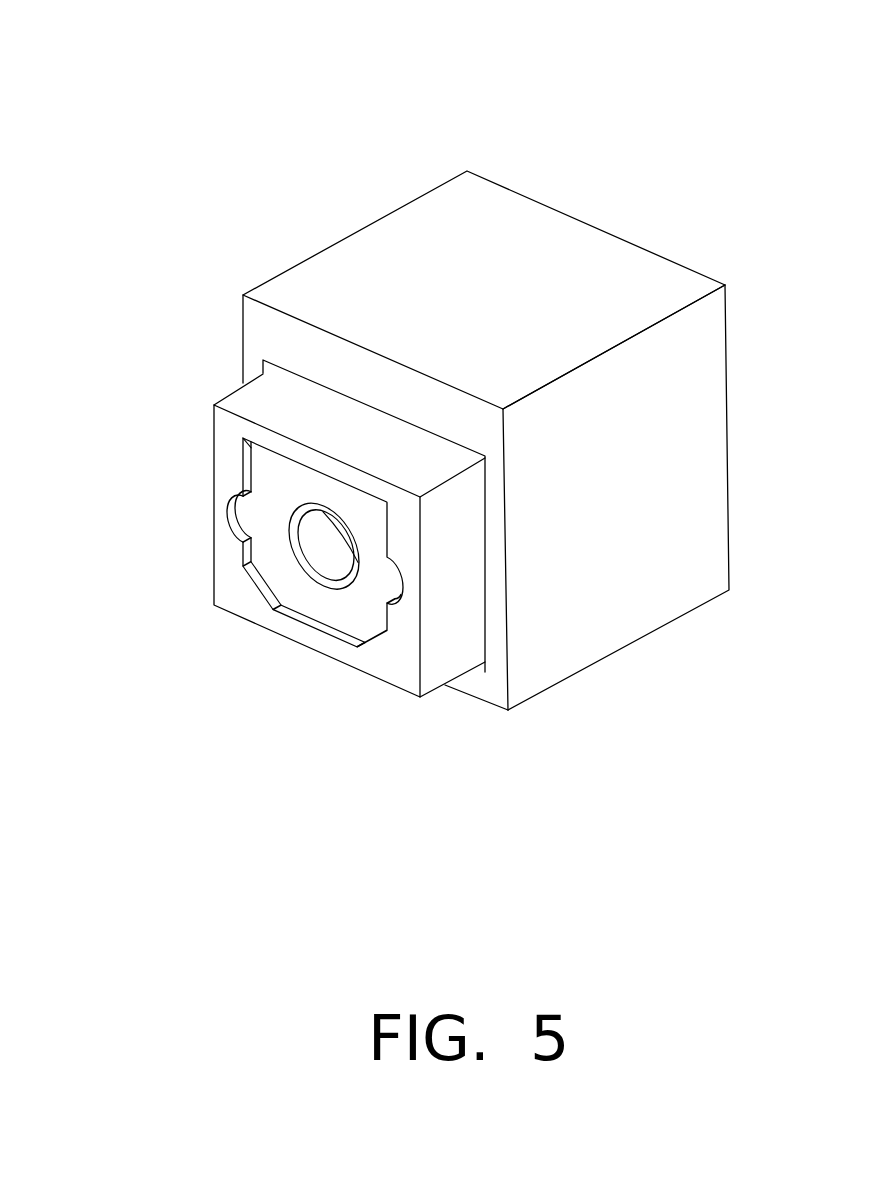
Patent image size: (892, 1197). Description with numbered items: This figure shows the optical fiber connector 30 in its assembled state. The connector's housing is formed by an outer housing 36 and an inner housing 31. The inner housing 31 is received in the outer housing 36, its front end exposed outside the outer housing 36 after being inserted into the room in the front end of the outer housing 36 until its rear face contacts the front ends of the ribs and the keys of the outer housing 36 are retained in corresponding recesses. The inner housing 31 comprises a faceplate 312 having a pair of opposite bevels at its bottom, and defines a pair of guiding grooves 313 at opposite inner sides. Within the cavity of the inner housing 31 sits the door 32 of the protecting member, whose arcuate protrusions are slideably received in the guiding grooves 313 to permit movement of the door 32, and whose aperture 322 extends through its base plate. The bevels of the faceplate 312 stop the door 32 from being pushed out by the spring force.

The optical fiber connector 30 is at (467, 72).
The inner housing 31 is at (497, 504).
The faceplate 312 is at (275, 590).
The guiding grooves 313 is at (230, 520).
The door 32 is at (343, 605).
The aperture 322 is at (300, 567).
The outer housing 36 is at (667, 575).